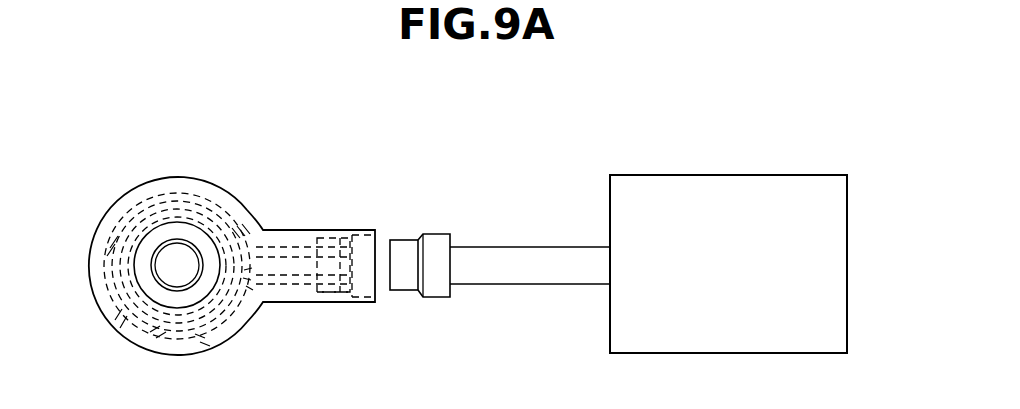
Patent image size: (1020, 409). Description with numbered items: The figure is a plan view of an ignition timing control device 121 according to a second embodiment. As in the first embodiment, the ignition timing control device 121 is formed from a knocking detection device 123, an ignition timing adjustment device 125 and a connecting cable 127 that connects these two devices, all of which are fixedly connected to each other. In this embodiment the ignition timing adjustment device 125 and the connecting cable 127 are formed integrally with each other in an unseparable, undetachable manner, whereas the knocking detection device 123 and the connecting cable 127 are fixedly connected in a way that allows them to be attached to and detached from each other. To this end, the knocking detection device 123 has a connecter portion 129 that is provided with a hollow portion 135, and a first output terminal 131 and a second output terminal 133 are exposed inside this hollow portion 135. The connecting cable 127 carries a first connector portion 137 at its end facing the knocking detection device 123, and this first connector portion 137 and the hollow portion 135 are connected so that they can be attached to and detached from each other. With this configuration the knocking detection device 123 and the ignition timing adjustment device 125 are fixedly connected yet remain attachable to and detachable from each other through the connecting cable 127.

The ignition timing control device 121 is at (547, 115).
The knocking detection device 123 is at (212, 150).
The ignition timing adjustment device 125 is at (737, 143).
The connecting cable 127 is at (515, 254).
The connecter portion 129 is at (290, 292).
The first output terminal 131 is at (330, 245).
The second output terminal 133 is at (327, 277).
The hollow portion 135 is at (365, 277).
The first connector portion 137 is at (400, 247).